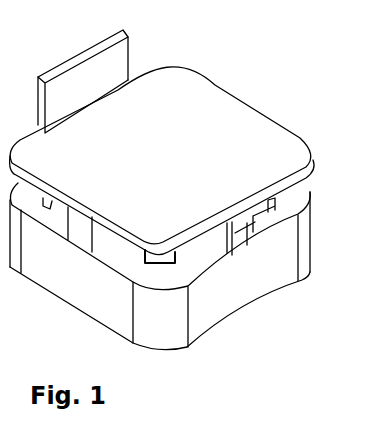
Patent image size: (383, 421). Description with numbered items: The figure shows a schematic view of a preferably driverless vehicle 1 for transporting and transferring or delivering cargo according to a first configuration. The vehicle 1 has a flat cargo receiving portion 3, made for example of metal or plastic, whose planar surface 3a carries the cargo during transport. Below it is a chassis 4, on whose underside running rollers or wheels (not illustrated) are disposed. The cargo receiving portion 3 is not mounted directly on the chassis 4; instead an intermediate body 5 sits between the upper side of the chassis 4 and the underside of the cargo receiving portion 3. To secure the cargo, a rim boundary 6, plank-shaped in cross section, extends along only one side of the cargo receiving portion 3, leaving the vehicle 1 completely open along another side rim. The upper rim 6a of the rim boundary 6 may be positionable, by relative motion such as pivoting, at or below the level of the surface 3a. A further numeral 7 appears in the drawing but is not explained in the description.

The vehicle 1 is at (258, 90).
The cargo receiving portion 3 is at (286, 131).
The surface 3a is at (188, 178).
The chassis 4 is at (226, 301).
The intermediate body 5 is at (275, 212).
The rim boundary 6 is at (128, 57).
The upper rim 6a is at (73, 55).
The element 7 is at (257, 408).